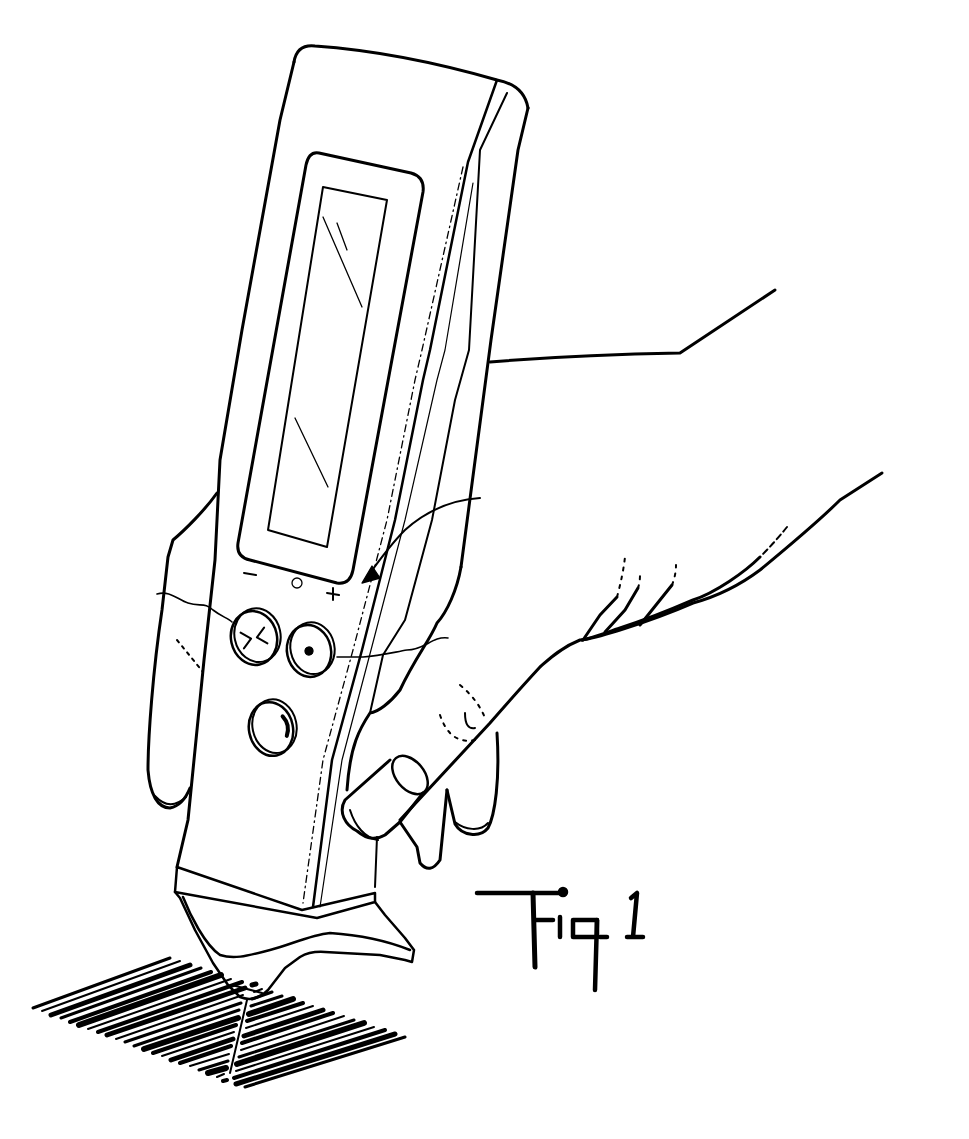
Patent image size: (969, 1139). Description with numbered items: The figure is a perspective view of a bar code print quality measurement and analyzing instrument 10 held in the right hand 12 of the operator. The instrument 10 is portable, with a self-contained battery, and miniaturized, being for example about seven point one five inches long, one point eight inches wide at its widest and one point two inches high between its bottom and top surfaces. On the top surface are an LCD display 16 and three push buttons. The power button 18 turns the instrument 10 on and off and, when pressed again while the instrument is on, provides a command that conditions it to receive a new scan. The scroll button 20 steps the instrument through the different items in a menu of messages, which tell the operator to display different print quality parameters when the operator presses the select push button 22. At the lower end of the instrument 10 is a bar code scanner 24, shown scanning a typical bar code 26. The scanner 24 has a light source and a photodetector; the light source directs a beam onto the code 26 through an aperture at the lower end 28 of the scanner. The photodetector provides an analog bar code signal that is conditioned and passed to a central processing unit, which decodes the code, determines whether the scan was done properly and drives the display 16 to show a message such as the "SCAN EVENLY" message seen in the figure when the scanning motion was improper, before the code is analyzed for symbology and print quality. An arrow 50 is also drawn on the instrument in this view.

The bar code print quality measurement and analyzing instrument 10 is at (258, 222).
The right hand 12 is at (548, 353).
The LCD display 16 is at (377, 211).
The power button 18 is at (280, 760).
The scroll button 20 is at (258, 667).
The select push button 22 is at (311, 680).
The bar code scanner 24 is at (288, 980).
The bar code 26 is at (362, 1052).
The lower end of the scanner 28 is at (230, 1073).
The arrow indicating scan direction 50 is at (438, 533).